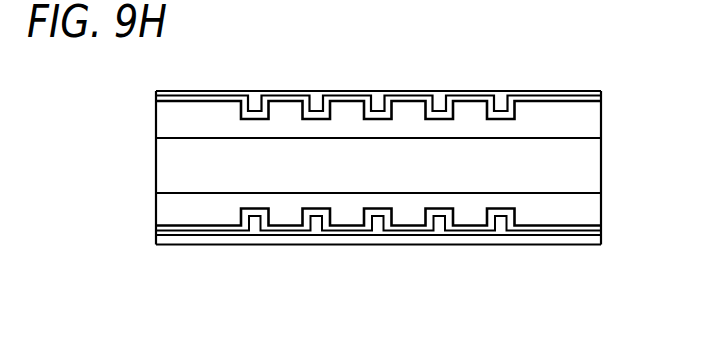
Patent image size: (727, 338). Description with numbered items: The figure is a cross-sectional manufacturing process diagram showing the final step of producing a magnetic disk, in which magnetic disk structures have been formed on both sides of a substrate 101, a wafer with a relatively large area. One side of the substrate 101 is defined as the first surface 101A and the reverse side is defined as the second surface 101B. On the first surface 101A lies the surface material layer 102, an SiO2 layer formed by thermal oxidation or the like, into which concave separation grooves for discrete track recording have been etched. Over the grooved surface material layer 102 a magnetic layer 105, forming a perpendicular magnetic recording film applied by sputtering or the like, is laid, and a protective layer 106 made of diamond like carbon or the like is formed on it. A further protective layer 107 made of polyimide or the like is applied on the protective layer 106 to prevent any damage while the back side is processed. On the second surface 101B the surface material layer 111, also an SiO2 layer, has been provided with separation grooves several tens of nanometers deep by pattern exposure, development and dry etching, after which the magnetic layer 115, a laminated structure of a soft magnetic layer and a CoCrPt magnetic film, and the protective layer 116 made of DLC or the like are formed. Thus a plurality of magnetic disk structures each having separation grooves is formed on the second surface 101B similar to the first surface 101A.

The substrate 101 is at (578, 160).
The first surface 101A is at (205, 196).
The second surface 101B is at (346, 134).
The surface material layer 102 is at (590, 203).
The magnetic layer 105 is at (478, 228).
The protective layer 106 is at (392, 235).
The protective layer 107 is at (303, 240).
The surface material layer 111 is at (588, 120).
The magnetic layer 115 is at (580, 91).
The protective layer 116 is at (535, 91).